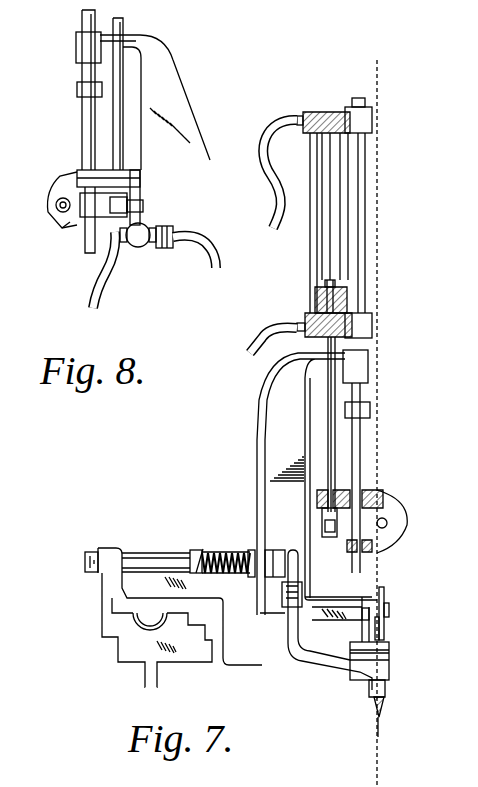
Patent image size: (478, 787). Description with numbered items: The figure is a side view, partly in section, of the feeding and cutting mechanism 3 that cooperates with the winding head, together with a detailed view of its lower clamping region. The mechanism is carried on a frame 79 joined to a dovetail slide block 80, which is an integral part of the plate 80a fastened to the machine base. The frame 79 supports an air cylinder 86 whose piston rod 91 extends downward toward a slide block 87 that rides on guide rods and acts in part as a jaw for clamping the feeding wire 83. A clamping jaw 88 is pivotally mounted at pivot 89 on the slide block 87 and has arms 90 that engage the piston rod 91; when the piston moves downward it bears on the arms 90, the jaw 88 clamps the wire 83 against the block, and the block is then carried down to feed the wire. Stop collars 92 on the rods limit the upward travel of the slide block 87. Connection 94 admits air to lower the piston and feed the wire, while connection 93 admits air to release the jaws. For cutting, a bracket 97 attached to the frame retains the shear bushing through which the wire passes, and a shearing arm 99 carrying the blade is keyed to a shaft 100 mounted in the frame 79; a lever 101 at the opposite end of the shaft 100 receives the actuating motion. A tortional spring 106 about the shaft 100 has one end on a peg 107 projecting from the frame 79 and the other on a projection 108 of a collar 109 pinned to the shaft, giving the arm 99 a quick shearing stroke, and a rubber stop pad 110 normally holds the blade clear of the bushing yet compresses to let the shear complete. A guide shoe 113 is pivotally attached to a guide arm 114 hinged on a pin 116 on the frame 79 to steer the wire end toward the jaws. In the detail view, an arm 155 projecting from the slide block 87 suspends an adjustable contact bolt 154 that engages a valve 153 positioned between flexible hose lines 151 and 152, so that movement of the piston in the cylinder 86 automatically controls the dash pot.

In FIG. 8, the frame 79 is at (160, 52).
In FIG. 7, the frame 79 is at (257, 440).
In FIG. 8, the piston rod 91 is at (113, 116).
In FIG. 7, the piston rod 91 is at (327, 417).
In FIG. 8, the arm 155 is at (140, 178).
In FIG. 8, the adjustable contact bolt 154 is at (141, 205).
In FIG. 8, the valve 153 is at (140, 248).
In FIG. 8, the flexible hose line 151 is at (216, 256).
In FIG. 8, the flexible hose line 152 is at (93, 292).
In FIG. 8, the clamping jaw 88 is at (60, 178).
In FIG. 7, the clamping jaw 88 is at (393, 500).
In FIG. 8, the slide block 87 is at (60, 228).
In FIG. 7, the slide block 87 is at (372, 492).
In FIG. 7, the air cylinder 86 is at (335, 185).
In FIG. 7, the connection 94 is at (292, 118).
In FIG. 7, the connection 93 is at (262, 333).
In FIG. 7, the feeding wire 83 is at (380, 228).
In FIG. 7, the feeding and cutting mechanism 3 is at (400, 296).
In FIG. 7, the stop collar 92 is at (371, 410).
In FIG. 7, the pivot 89 is at (388, 524).
In FIG. 7, the arms 90 is at (340, 530).
In FIG. 7, the lever 101 is at (88, 553).
In FIG. 7, the shaft 100 is at (140, 553).
In FIG. 7, the collar 109 is at (190, 555).
In FIG. 7, the projection 108 is at (200, 549).
In FIG. 7, the tortional spring 106 is at (248, 550).
In FIG. 7, the peg 107 is at (246, 590).
In FIG. 7, the dovetail slide block 80 is at (114, 647).
In FIG. 7, the plate 80a is at (150, 674).
In FIG. 7, the stop pad 110 is at (284, 612).
In FIG. 7, the shearing arm 99 is at (334, 667).
In FIG. 7, the bracket 97 is at (389, 660).
In FIG. 7, the pin 116 is at (389, 608).
In FIG. 7, the guide arm 114 is at (380, 630).
In FIG. 7, the guide shoe 113 is at (386, 712).